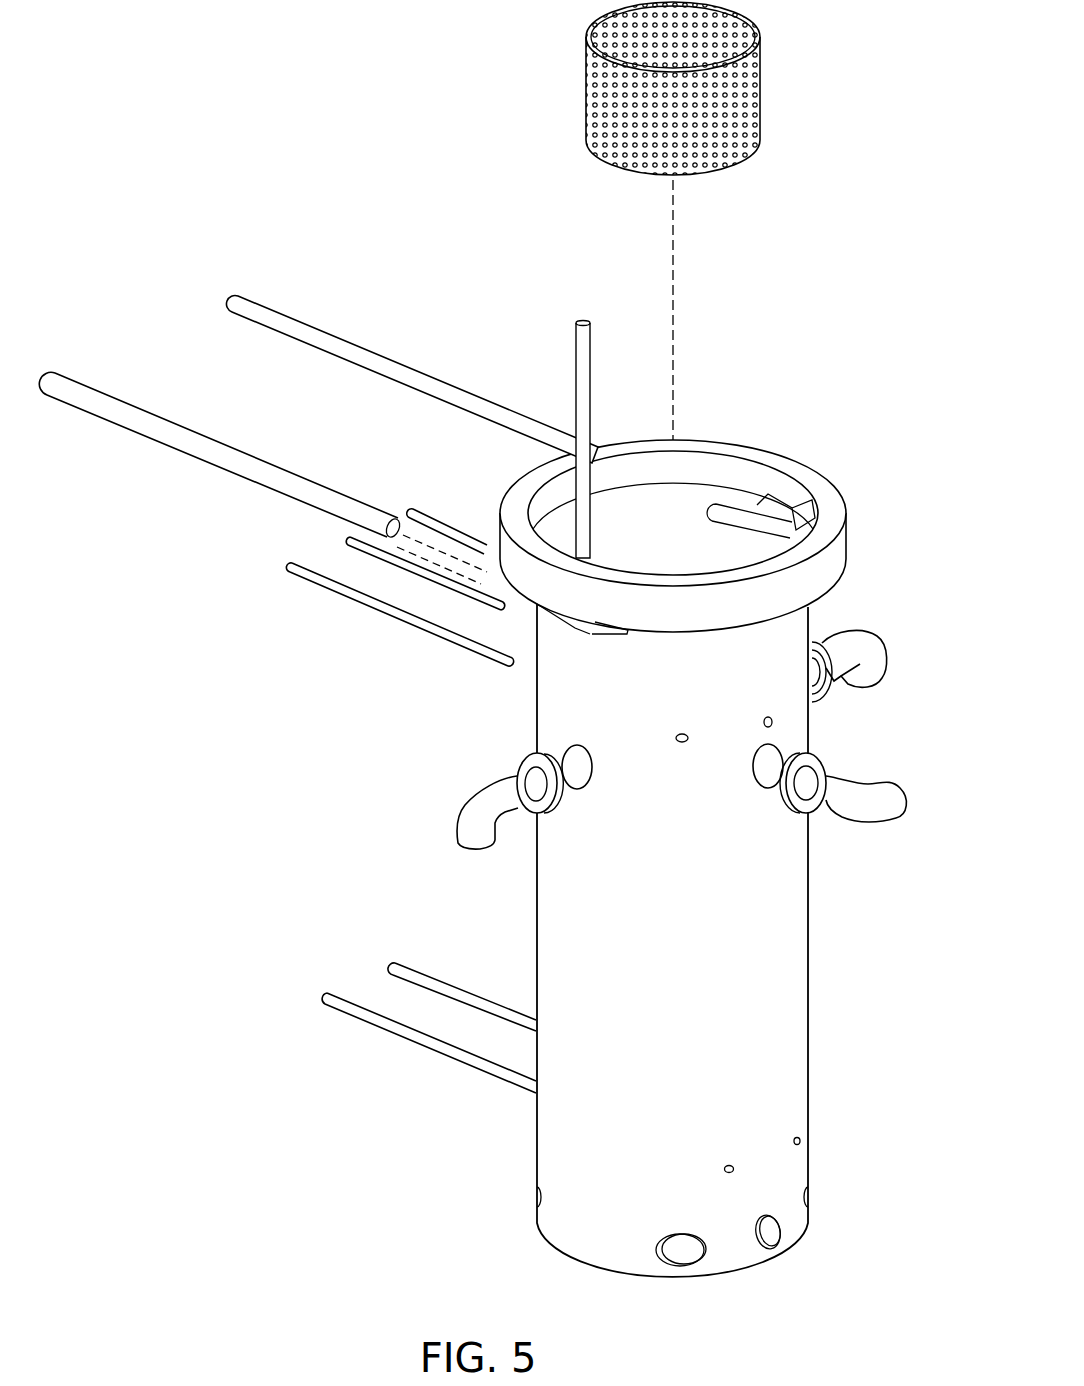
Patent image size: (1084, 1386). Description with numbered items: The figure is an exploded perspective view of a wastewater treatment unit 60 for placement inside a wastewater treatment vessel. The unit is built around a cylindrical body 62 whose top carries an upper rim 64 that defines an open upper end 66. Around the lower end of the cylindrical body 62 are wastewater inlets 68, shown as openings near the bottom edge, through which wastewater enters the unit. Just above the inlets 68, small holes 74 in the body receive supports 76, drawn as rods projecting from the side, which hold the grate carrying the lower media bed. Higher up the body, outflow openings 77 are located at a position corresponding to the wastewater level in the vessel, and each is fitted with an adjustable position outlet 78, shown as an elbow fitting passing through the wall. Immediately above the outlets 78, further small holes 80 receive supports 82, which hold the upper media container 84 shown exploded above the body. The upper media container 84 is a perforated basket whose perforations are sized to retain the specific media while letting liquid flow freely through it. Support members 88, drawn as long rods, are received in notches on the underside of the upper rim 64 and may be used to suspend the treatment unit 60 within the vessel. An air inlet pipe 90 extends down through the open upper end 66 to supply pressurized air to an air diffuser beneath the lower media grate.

The wastewater treatment unit 60 is at (197, 828).
The cylindrical body 62 is at (795, 988).
The upper rim 64 is at (836, 551).
The open upper end 66 is at (759, 436).
The wastewater inlets 68 is at (775, 1247).
The small holes 74 is at (733, 1168).
The supports 76 is at (325, 996).
The outflow openings 77 is at (752, 775).
The adjustable position outlets 78 is at (458, 802).
The small holes 80 is at (765, 719).
The supports 82 is at (290, 566).
The upper media container 84 is at (760, 108).
The support members 88 is at (82, 380).
The air inlet pipe 90 is at (578, 365).